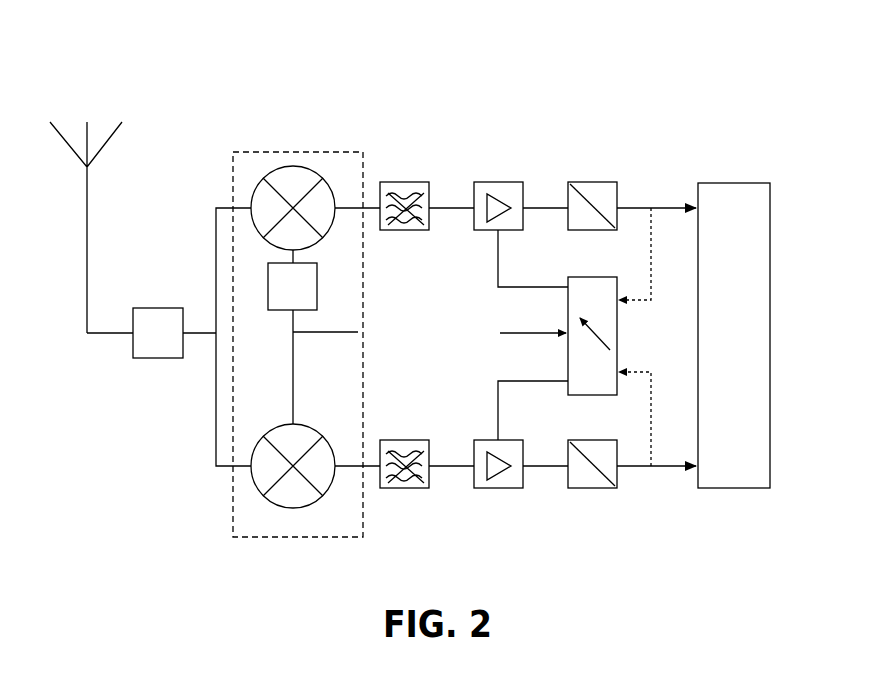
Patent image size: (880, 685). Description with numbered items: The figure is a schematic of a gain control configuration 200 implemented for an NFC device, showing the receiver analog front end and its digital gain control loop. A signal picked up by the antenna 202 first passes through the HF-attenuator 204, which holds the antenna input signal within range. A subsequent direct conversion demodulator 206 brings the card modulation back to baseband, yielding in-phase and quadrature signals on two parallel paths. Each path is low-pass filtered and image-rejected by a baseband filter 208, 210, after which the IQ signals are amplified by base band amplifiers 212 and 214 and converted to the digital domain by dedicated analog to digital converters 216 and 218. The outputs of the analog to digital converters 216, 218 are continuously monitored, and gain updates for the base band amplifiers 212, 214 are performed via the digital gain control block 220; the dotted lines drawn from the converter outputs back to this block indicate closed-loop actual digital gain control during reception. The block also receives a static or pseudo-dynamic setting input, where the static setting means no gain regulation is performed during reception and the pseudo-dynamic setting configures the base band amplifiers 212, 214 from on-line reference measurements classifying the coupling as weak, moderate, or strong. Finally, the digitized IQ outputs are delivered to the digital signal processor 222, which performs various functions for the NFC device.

The receiver 200 is at (699, 102).
The antenna 202 is at (97, 112).
The HF-attenuator 204 is at (160, 305).
The direct conversion demodulator 206 is at (294, 150).
The baseband filter (I) 208 is at (424, 180).
The baseband filter (Q) 210 is at (424, 438).
The base band amplifier 212 is at (522, 180).
The base band amplifier 214 is at (522, 438).
The analog to digital converter 216 is at (614, 180).
The analog to digital converter 218 is at (606, 438).
The digital gain control block 220 is at (619, 340).
The digital signal processor 222 is at (773, 247).